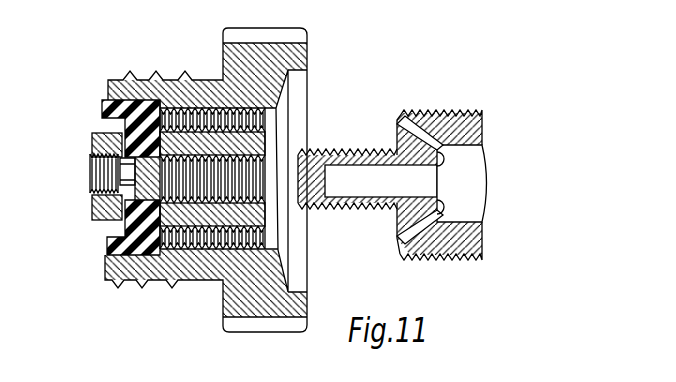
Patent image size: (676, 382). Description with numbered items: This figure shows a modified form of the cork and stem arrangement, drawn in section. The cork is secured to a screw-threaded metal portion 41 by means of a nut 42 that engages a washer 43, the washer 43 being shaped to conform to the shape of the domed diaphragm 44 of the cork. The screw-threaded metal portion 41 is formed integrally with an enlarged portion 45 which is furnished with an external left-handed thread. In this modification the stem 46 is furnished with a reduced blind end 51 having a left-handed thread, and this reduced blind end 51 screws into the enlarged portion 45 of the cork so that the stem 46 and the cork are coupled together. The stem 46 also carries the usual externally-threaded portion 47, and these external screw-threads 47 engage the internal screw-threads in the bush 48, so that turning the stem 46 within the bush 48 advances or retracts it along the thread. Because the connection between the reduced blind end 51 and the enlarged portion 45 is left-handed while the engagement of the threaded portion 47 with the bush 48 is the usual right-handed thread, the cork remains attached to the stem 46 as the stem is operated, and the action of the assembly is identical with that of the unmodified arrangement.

The screw-threaded metal portion 41 is at (122, 174).
The nut 42 is at (93, 207).
The washer 43 is at (105, 121).
The domed diaphragm 44 is at (108, 242).
The enlarged portion 45 is at (258, 143).
The stem 46 is at (437, 130).
The externally-threaded portion 47 is at (436, 250).
The bush 48 is at (188, 78).
The reduced blind end 51 is at (340, 150).